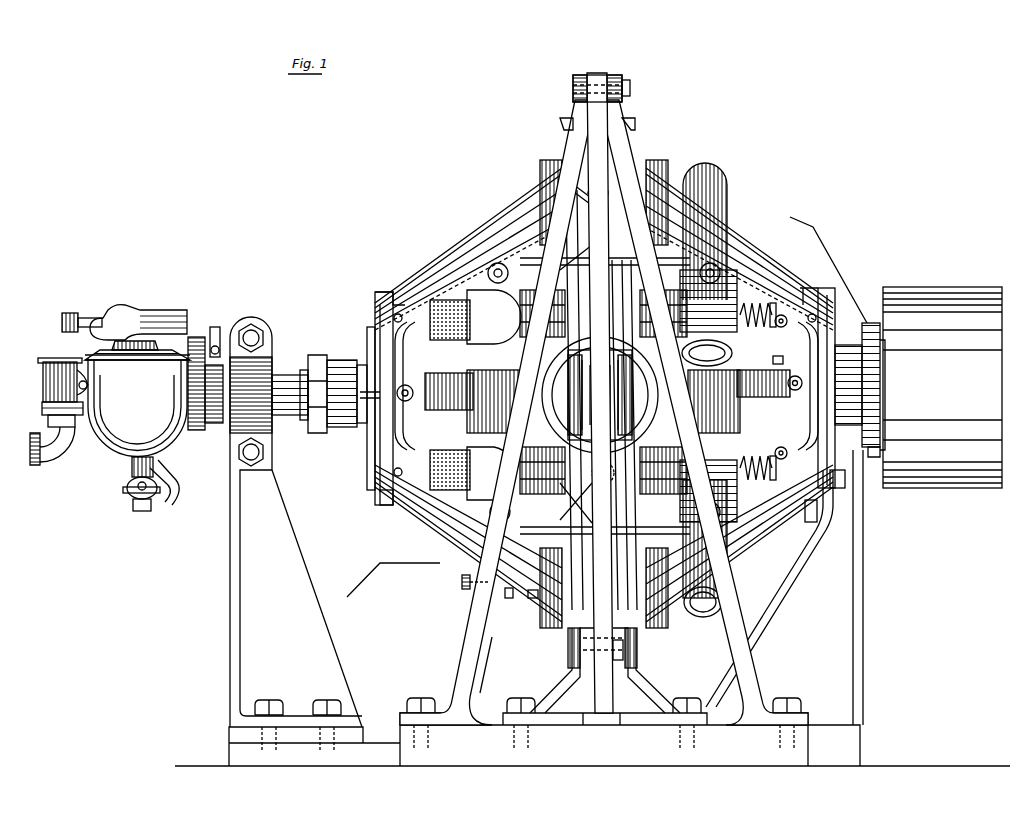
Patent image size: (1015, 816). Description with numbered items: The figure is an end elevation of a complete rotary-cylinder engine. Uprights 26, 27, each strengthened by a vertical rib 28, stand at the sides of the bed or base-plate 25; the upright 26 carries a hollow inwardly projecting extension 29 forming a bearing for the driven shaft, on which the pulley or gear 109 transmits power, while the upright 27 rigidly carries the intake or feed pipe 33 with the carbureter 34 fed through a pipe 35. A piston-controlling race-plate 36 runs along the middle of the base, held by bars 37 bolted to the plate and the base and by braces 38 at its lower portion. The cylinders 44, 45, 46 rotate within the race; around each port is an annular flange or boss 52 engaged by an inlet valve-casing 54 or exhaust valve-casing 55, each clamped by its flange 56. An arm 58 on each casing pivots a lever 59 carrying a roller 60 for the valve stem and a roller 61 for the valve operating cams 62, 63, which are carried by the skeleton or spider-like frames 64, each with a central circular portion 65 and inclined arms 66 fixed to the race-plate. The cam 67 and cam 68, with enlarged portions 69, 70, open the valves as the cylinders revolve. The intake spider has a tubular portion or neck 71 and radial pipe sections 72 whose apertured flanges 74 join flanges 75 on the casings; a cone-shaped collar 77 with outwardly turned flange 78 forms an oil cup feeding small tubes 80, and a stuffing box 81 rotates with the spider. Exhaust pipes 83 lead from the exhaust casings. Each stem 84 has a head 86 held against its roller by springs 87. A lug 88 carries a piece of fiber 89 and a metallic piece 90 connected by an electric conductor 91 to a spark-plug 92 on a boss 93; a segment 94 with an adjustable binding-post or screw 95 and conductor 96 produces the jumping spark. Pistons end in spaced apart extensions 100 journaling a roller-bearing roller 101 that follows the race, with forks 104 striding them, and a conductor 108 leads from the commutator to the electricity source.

The bed or base-plate 25 is at (592, 732).
The upright 26 is at (856, 660).
The upright 27 is at (232, 646).
The vertical rib 28 is at (772, 640).
The hollow inwardly projecting extension 29 is at (771, 354).
The intake or feed pipe 33 is at (290, 395).
The carbureter 34 is at (142, 408).
The pipe 35 is at (66, 460).
The piston-controlling race-plate 36 is at (586, 91).
The bars 37 is at (596, 74).
The braces 38 is at (640, 720).
The cylinder 44 is at (645, 168).
The cylinder 45 is at (600, 338).
The cylinder 46 is at (640, 652).
The annular flange or boss 52 is at (603, 392).
The inlet valve-casing 54 is at (452, 268).
The exhaust valve-casing 55 is at (758, 540).
The flange 56 is at (518, 228).
The arm 58 is at (425, 275).
The lever 59 is at (396, 312).
The roller 60 is at (600, 386).
The roller 61 is at (376, 300).
The valve operating cam 62 is at (378, 498).
The valve operating cam 63 is at (803, 513).
The skeleton or spider-like frame 64 is at (366, 440).
The central circular portion 65 is at (368, 335).
The arms 66 is at (458, 250).
The cam 67 is at (325, 416).
The cam 68 is at (815, 381).
The enlarged portion 69 is at (378, 312).
The enlarged portion 70 is at (803, 290).
The tubular portion or neck 71 is at (360, 366).
The radial pipe sections 72 is at (494, 395).
The apertured flange 74 is at (605, 381).
The flange 75 is at (603, 372).
The cone-shaped collar or nut 77 is at (342, 360).
The outwardly turned flange 78 is at (372, 432).
The small tubes 80 is at (500, 245).
The stuffing box 81 is at (312, 356).
The exhaust pipe 83 is at (712, 175).
The stem 84 is at (740, 312).
The head 86 is at (608, 395).
The springs 87 is at (760, 391).
The lug 88 is at (548, 215).
The piece of fiber 89 is at (536, 604).
The metallic piece 90 is at (509, 602).
The electric conductor 91 is at (583, 362).
The spark-plug 92 is at (612, 381).
The boss 93 is at (605, 400).
The segment 94 is at (488, 653).
The adjustable binding-post or screw 95 is at (462, 582).
The conductor 96 is at (393, 580).
The spaced apart extensions 100 is at (600, 395).
The roller-bearing roller 101 is at (600, 387).
The forks 104 is at (560, 124).
The conductor 108 is at (828, 262).
The pulley or gear 109 is at (942, 387).